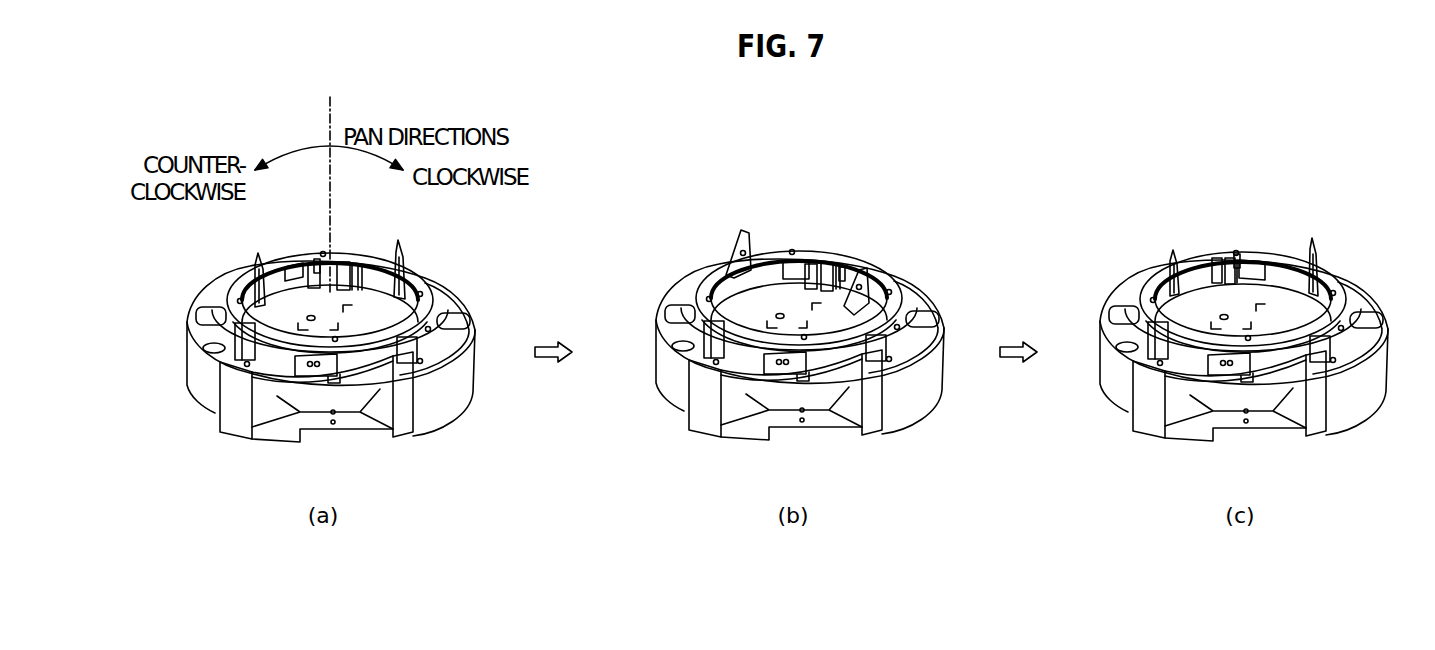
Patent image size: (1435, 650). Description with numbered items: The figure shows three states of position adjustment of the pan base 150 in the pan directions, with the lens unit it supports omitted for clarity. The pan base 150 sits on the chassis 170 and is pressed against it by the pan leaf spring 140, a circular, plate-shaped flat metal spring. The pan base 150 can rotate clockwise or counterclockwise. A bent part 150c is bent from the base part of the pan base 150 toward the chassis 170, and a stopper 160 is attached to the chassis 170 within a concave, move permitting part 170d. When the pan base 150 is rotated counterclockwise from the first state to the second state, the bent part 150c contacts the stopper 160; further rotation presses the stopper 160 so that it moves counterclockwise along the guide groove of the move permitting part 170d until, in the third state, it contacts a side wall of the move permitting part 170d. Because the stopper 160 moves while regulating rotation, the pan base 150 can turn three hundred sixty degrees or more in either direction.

The pan leaf spring 140 is at (427, 282).
The pan base 150 is at (400, 247).
The bent part 150c is at (317, 262).
The stopper 160 is at (355, 255).
The chassis 170 is at (468, 308).
The concave, move permitting part 170d is at (303, 263).